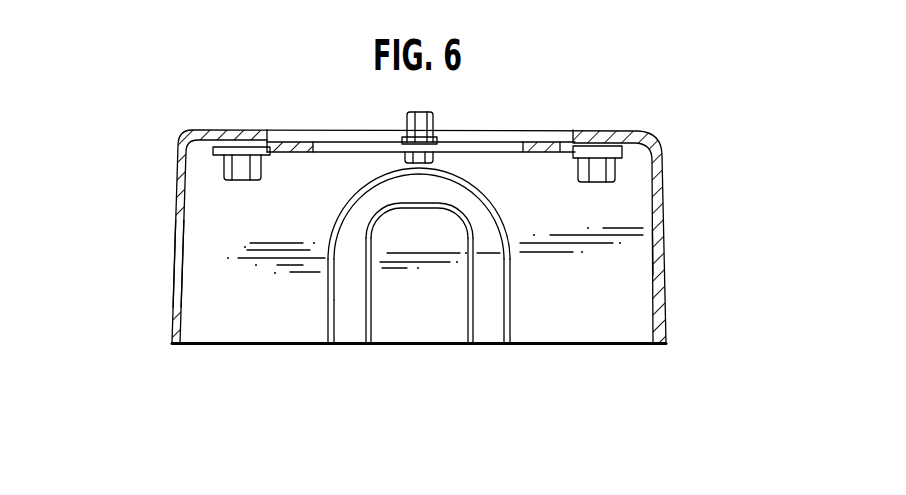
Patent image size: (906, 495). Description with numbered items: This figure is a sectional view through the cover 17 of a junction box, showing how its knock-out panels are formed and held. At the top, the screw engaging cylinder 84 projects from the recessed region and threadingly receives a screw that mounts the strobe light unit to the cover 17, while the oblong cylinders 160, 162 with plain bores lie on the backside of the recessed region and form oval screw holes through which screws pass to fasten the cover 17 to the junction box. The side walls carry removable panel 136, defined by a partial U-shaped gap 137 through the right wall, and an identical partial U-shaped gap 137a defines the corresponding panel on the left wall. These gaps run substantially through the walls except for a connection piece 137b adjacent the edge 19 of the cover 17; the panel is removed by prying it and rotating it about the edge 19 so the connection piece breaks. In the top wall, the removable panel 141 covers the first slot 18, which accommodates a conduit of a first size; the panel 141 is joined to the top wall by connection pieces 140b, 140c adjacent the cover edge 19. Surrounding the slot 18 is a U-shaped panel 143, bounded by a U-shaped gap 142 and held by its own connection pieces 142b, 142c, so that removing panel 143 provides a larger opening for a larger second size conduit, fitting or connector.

The cover 17 is at (650, 124).
The first slot 18 is at (476, 326).
The edge 19 is at (177, 346).
The screw engaging cylinder 84 is at (438, 116).
The removable panel 136 is at (668, 251).
The partial U-shaped gap 137 is at (667, 190).
The partial U-shaped gap 137a is at (174, 312).
The connection piece 137b is at (174, 330).
The connection piece 140b is at (462, 326).
The connection piece 140c is at (375, 328).
The removable panel 141 is at (397, 330).
The U-shaped gap 142 is at (513, 325).
The connection piece 142b is at (500, 326).
The connection piece 142c is at (338, 305).
The U-shaped panel 143 is at (342, 326).
The oblong cylinder 160 is at (566, 170).
The oblong cylinder 162 is at (270, 168).